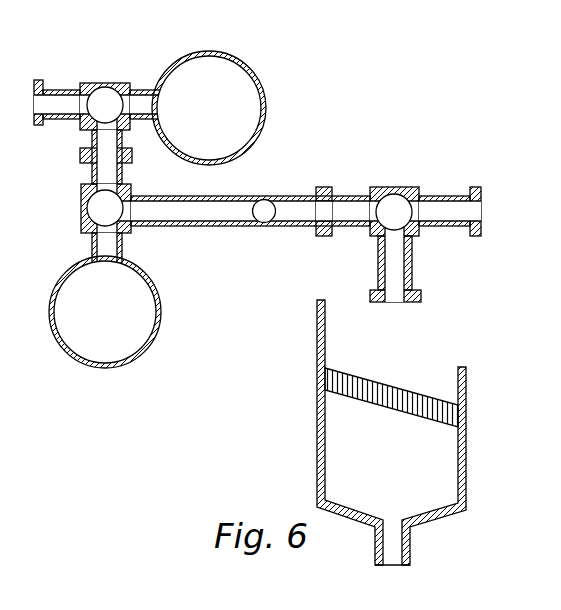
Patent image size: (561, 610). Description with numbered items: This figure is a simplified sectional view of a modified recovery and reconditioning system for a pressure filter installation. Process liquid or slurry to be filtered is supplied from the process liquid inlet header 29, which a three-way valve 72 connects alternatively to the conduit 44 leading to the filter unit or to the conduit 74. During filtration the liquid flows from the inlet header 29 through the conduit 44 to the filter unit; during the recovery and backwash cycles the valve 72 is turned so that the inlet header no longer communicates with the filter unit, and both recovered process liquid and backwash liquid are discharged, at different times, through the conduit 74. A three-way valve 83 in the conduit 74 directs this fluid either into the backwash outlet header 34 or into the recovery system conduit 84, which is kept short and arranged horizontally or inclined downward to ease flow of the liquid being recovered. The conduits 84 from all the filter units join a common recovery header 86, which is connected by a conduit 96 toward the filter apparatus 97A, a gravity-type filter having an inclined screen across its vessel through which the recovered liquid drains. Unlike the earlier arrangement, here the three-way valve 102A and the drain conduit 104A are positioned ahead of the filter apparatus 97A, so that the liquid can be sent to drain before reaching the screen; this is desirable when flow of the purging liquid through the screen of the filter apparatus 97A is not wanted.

The conduit 44 is at (57, 90).
The three-way valve 72 is at (95, 83).
The process liquid inlet header 29 is at (218, 52).
The conduit 74 is at (92, 137).
The three-way valve 83 is at (82, 222).
The recovery system conduit 84 is at (176, 227).
The recovery header 86 is at (265, 201).
The conduit 96 is at (306, 196).
The three-way valve 102A is at (378, 193).
The conduit 104A is at (440, 196).
The backwash outlet header 34 is at (109, 368).
The filter apparatus 97A is at (318, 400).